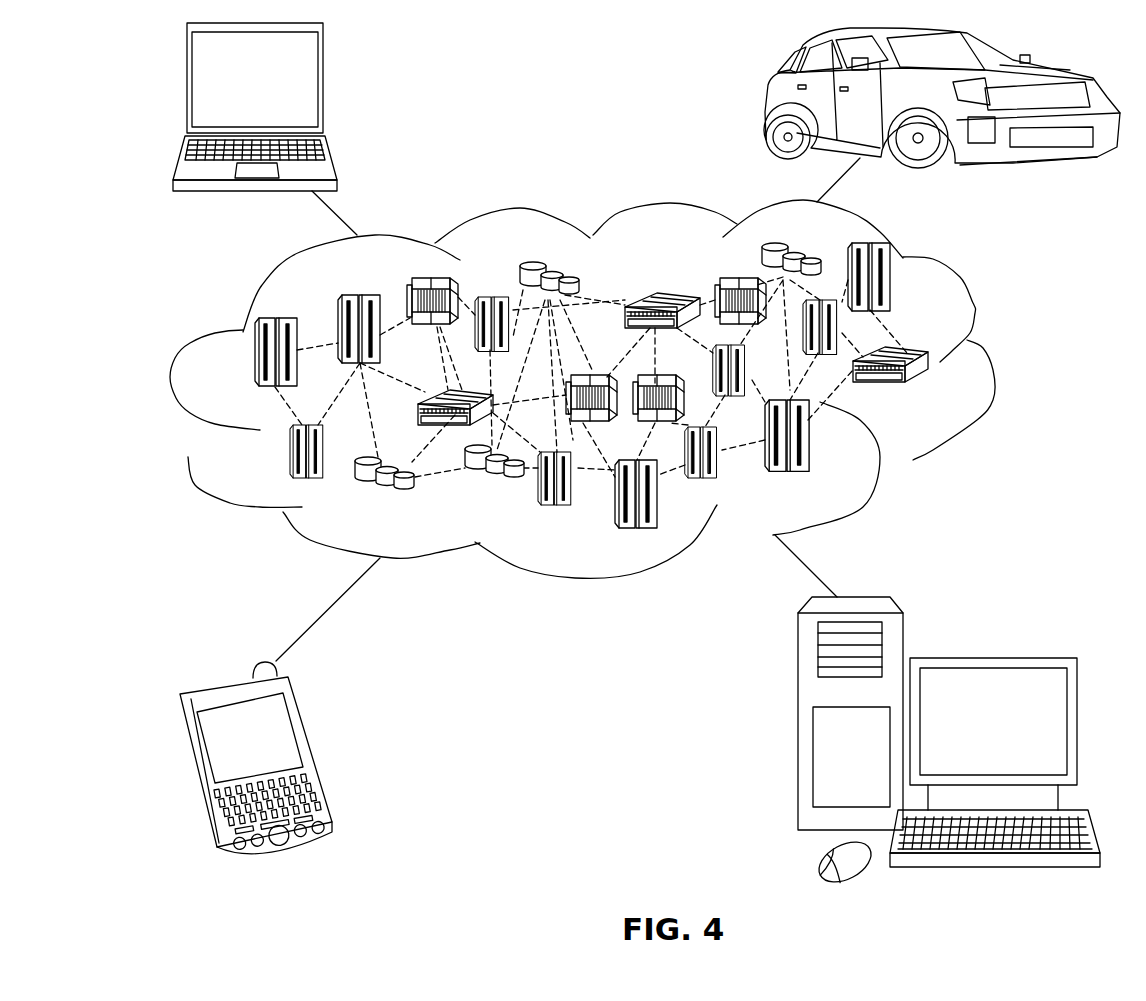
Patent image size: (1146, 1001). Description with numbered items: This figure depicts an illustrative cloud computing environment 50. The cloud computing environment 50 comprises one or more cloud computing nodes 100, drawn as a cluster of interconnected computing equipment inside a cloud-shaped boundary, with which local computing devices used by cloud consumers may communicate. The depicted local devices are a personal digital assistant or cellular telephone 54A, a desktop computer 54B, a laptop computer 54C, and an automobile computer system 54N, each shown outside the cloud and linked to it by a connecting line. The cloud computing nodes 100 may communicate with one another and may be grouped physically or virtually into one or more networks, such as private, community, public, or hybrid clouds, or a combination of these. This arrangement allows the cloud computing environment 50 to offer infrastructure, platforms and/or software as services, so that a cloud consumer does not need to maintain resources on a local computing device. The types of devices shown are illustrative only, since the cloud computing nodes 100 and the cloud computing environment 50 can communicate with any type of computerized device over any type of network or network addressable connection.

The cloud computing environment 50 is at (992, 362).
The cloud computing nodes 100 is at (940, 397).
The personal digital assistant (PDA) or cellular telephone 54A is at (315, 750).
The desktop computer 54B is at (990, 655).
The laptop computer 54C is at (325, 88).
The automobile computer system 54N is at (770, 100).